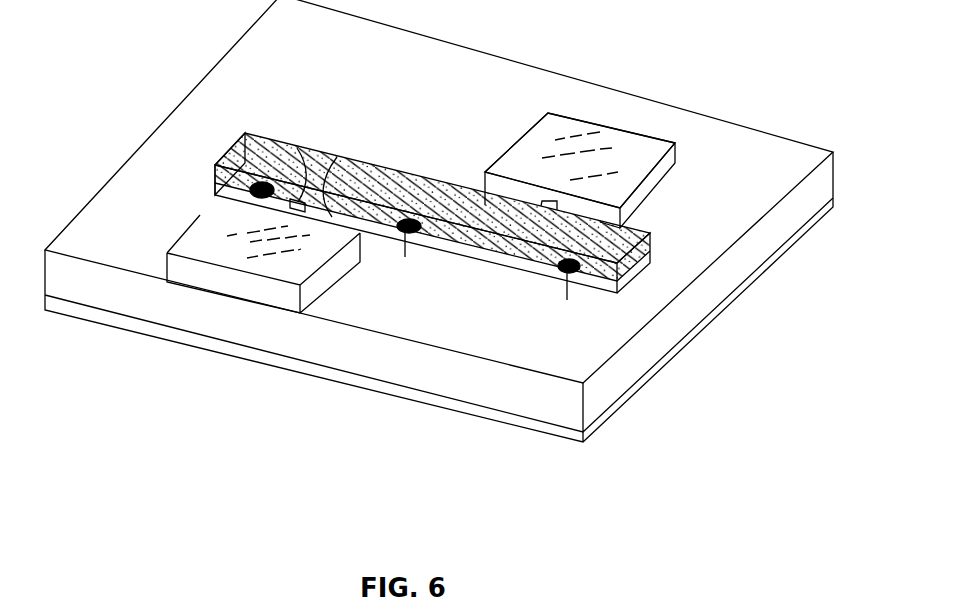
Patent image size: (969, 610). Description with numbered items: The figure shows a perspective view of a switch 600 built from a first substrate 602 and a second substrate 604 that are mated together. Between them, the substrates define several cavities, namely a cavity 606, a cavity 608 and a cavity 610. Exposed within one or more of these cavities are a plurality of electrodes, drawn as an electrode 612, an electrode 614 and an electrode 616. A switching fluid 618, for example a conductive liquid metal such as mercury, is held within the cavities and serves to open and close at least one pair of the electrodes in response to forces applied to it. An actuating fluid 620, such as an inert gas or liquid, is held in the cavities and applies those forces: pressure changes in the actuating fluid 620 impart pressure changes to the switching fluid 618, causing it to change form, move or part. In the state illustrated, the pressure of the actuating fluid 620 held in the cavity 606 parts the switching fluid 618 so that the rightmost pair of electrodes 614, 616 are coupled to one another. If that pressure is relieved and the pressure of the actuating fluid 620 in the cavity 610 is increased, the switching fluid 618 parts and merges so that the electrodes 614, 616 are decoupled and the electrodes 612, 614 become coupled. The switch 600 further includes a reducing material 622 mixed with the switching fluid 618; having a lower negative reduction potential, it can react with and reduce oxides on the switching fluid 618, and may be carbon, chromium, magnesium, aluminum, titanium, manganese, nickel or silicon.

The switch 600 is at (703, 53).
The first substrate 602 is at (95, 193).
The second substrate 604 is at (550, 437).
The cavity 606 is at (166, 264).
The cavity 608 is at (633, 278).
The cavity 610 is at (668, 192).
The electrode 612 is at (262, 184).
The electrode 614 is at (413, 247).
The electrode 616 is at (568, 288).
The switching fluid 618 is at (216, 172).
The actuating fluid 620 is at (232, 231).
The reducing material 622 is at (363, 182).